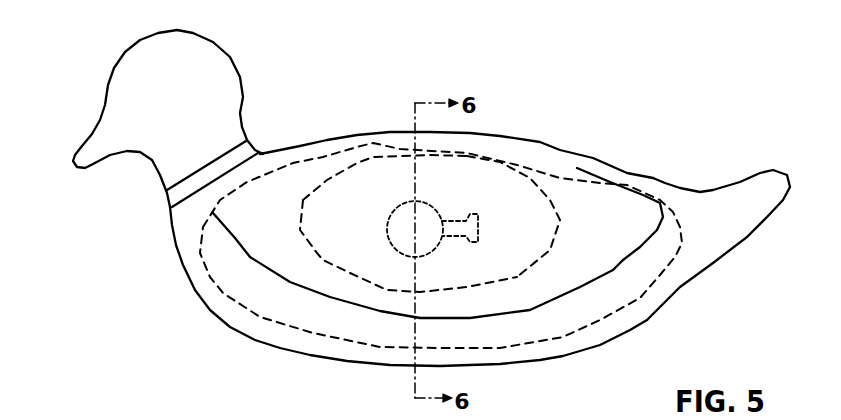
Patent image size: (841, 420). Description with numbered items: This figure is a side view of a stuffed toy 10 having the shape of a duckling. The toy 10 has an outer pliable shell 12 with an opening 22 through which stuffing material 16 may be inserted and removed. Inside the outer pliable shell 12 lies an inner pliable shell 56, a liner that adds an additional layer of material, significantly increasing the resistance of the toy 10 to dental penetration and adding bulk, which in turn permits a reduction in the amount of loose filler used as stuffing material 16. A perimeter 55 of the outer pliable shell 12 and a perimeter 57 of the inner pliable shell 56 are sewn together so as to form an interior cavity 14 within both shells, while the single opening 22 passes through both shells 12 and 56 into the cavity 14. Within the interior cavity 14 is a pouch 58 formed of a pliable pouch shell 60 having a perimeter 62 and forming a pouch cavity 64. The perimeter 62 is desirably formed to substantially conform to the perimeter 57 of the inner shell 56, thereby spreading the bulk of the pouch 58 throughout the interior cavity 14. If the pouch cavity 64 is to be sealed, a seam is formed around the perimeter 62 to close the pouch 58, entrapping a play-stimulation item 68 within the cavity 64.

The stuffed toy 10 is at (770, 342).
The outer pliable shell 12 is at (728, 197).
The interior cavity 14 is at (610, 239).
The stuffing material 16 is at (520, 220).
The opening 22 is at (516, 100).
The perimeter of outer pliable shell 55 is at (562, 357).
The inner pliable shell 56 is at (623, 290).
The perimeter of inner pliable shell 57 is at (497, 347).
The pouch 58 is at (390, 278).
The pliable pouch shell 60 is at (323, 254).
The perimeter of pouch shell 62 is at (208, 209).
The pouch cavity 64 is at (437, 209).
The play-stimulation item 68 is at (402, 223).